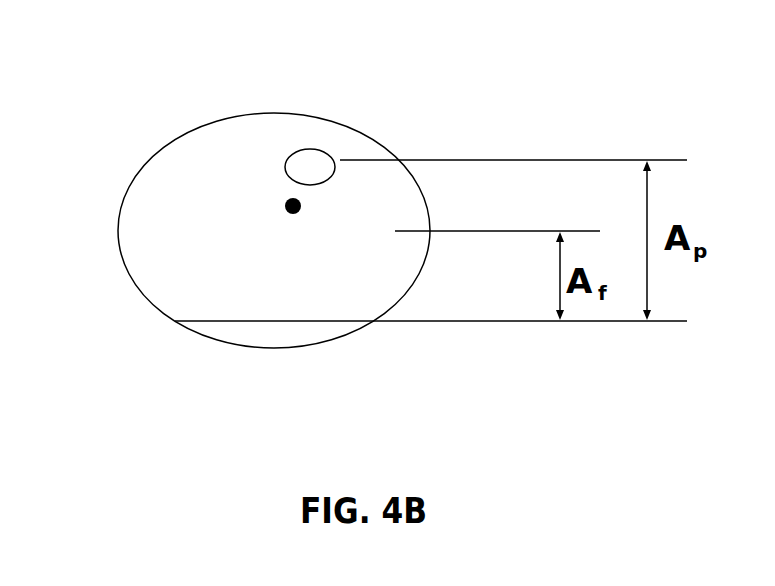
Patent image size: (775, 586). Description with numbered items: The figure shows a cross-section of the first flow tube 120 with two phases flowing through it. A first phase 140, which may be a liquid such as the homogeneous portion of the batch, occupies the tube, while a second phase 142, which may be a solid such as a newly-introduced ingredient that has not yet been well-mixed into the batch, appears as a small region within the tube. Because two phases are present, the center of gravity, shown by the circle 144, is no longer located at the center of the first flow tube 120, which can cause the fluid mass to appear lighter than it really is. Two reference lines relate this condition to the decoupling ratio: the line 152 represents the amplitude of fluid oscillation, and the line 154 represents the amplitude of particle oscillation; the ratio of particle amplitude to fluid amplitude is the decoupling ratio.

The first flow tube 120 is at (262, 112).
The first phase 140 is at (187, 275).
The second phase 142 is at (313, 162).
The circle 144 is at (287, 202).
The line 152 is at (482, 233).
The line 154 is at (540, 158).